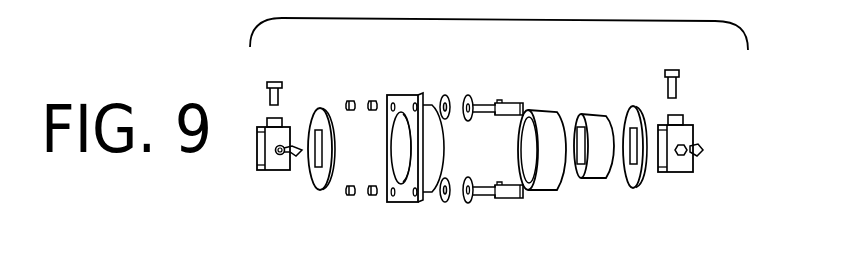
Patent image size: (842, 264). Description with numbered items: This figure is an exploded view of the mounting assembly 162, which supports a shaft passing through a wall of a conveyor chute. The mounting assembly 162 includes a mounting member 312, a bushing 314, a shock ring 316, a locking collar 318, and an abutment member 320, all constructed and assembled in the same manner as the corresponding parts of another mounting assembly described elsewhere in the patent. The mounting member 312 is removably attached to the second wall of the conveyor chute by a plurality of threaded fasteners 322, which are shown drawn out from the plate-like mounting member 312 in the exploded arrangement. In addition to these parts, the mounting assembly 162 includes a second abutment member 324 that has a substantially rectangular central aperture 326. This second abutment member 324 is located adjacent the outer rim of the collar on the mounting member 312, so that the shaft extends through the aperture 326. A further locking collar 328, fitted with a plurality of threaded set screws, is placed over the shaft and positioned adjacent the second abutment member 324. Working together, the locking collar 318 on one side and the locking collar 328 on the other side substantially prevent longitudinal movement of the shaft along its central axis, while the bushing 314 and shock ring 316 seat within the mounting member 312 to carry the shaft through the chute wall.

The mounting assembly 162 is at (545, 85).
The mounting member 312 is at (400, 93).
The bushing 314 is at (550, 178).
The shock ring 316 is at (598, 173).
The locking collar 318 is at (277, 170).
The abutment member 320 is at (318, 110).
The threaded fasteners 322 is at (480, 102).
The second abutment member 324 is at (683, 171).
The central aperture 326 is at (634, 160).
The locking collar 328 is at (688, 128).